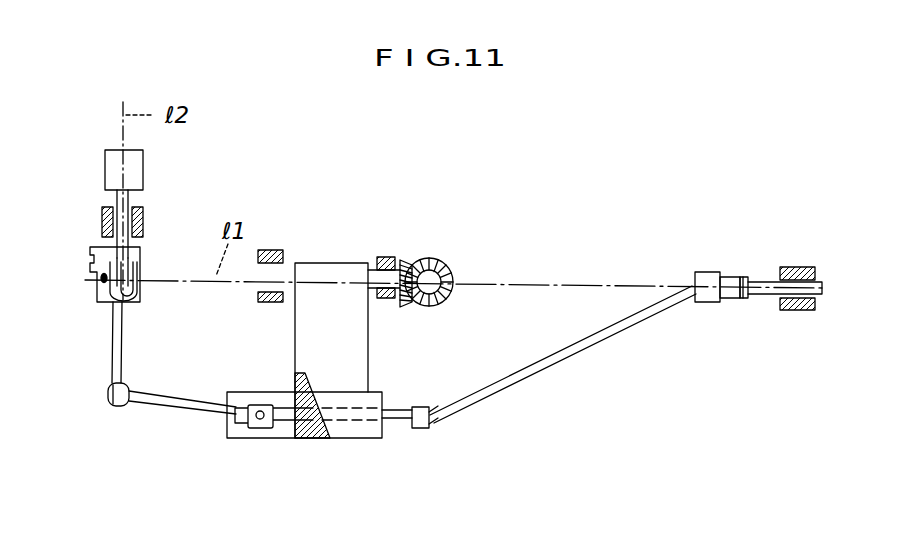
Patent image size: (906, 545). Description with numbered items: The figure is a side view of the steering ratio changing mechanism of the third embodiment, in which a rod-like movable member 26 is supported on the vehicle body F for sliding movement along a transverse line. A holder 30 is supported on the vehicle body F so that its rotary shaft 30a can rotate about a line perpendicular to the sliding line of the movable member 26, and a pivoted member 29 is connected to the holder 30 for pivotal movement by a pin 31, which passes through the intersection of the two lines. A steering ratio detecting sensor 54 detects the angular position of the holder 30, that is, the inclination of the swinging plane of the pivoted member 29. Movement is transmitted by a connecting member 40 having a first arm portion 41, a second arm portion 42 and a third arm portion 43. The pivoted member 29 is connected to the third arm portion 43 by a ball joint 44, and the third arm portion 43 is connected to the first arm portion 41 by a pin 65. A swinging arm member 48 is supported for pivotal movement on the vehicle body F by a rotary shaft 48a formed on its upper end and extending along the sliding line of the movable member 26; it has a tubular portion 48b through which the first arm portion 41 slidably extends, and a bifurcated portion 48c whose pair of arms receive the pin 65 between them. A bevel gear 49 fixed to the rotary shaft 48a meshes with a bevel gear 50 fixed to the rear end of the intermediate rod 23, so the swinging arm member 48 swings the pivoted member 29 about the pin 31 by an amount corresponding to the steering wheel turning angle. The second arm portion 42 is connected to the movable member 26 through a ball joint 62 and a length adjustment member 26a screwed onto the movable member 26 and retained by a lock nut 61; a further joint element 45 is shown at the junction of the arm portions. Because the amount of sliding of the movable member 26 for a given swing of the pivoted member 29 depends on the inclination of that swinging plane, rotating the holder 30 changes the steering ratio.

The intermediate rod 23 is at (434, 292).
The movable member 26 is at (766, 300).
The length adjustment member 26a is at (738, 277).
The pivoted member 29 is at (123, 330).
The holder 30 is at (145, 256).
The rotary shaft 30a is at (117, 205).
The pin 31 is at (102, 283).
The connecting member 40 is at (496, 402).
The first arm portion 41 is at (403, 426).
The second arm portion 42 is at (584, 345).
The third arm portion 43 is at (176, 416).
The ball joint 44 is at (122, 408).
The joint block 45 is at (432, 429).
The swinging arm member 48 is at (370, 361).
The rotary shaft 48a is at (382, 258).
The tubular portion 48b is at (356, 440).
The bifurcated portion 48c is at (276, 440).
The bevel gear 49 is at (406, 262).
The bevel gear 50 is at (444, 268).
The steering ratio detecting sensor 54 is at (143, 165).
The lock nut 61 is at (743, 300).
The ball joint 62 is at (697, 272).
The pin 65 is at (258, 402).
The vehicle body F is at (143, 222).